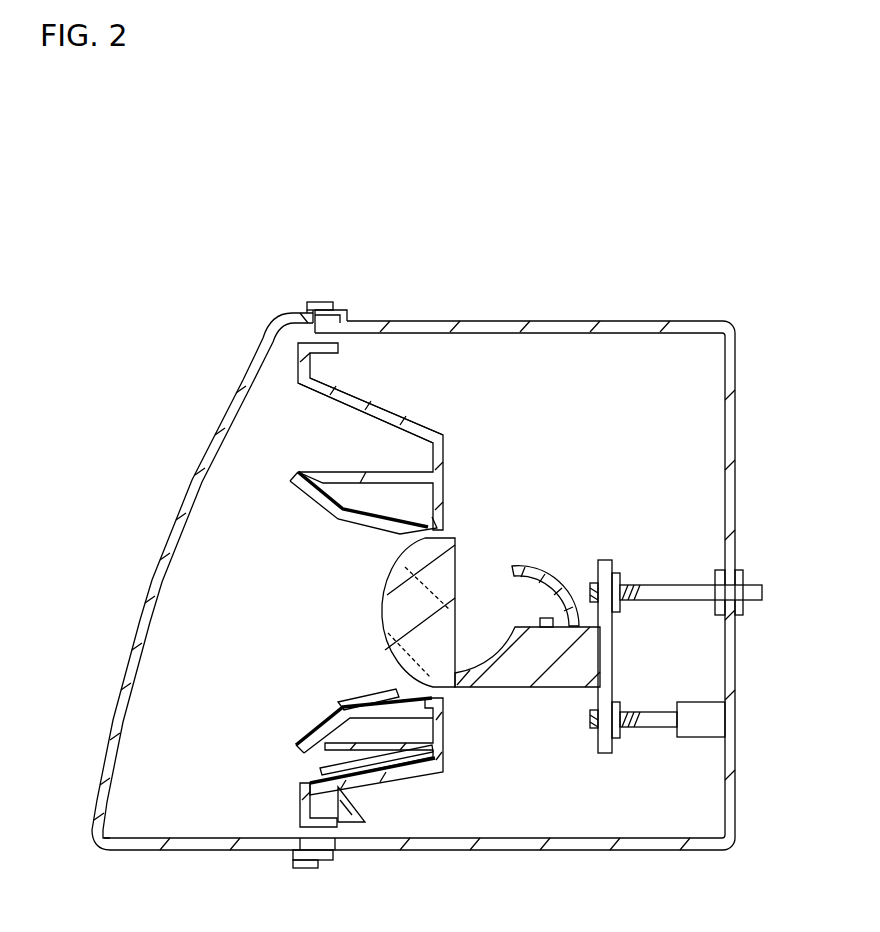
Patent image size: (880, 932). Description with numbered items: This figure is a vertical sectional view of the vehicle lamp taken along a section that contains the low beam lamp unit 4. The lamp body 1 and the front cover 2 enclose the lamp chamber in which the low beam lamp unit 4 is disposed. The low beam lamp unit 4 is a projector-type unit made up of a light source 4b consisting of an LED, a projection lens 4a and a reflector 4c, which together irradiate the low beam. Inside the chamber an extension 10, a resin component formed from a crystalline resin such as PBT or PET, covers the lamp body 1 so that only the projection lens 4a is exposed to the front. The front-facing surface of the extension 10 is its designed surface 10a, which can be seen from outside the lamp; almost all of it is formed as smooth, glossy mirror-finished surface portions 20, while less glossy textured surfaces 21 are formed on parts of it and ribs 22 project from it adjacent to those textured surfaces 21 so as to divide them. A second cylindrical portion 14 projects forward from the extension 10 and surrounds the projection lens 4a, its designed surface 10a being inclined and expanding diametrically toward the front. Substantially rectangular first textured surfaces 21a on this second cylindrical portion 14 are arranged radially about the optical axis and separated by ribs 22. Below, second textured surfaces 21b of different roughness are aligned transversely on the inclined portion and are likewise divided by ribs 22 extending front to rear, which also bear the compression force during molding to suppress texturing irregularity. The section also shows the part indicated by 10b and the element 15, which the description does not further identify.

The lamp body 1 is at (625, 322).
The front cover 2 is at (250, 368).
The low beam lamp unit 4 is at (549, 610).
The projection lens 4a is at (383, 614).
The light source 4b is at (570, 575).
The reflector 4c is at (550, 617).
The extension 10 is at (378, 436).
The designed surface 10a is at (322, 398).
The reflector extension portion 10b is at (377, 407).
The second cylindrical portion 14 is at (328, 502).
The lower reflector 15 is at (417, 773).
The mirror-finished surface portion 20 is at (310, 787).
The textured surface 21 is at (319, 731).
The first textured surface 21a is at (322, 730).
The second textured surface 21b is at (327, 768).
The rib 22 is at (352, 527).